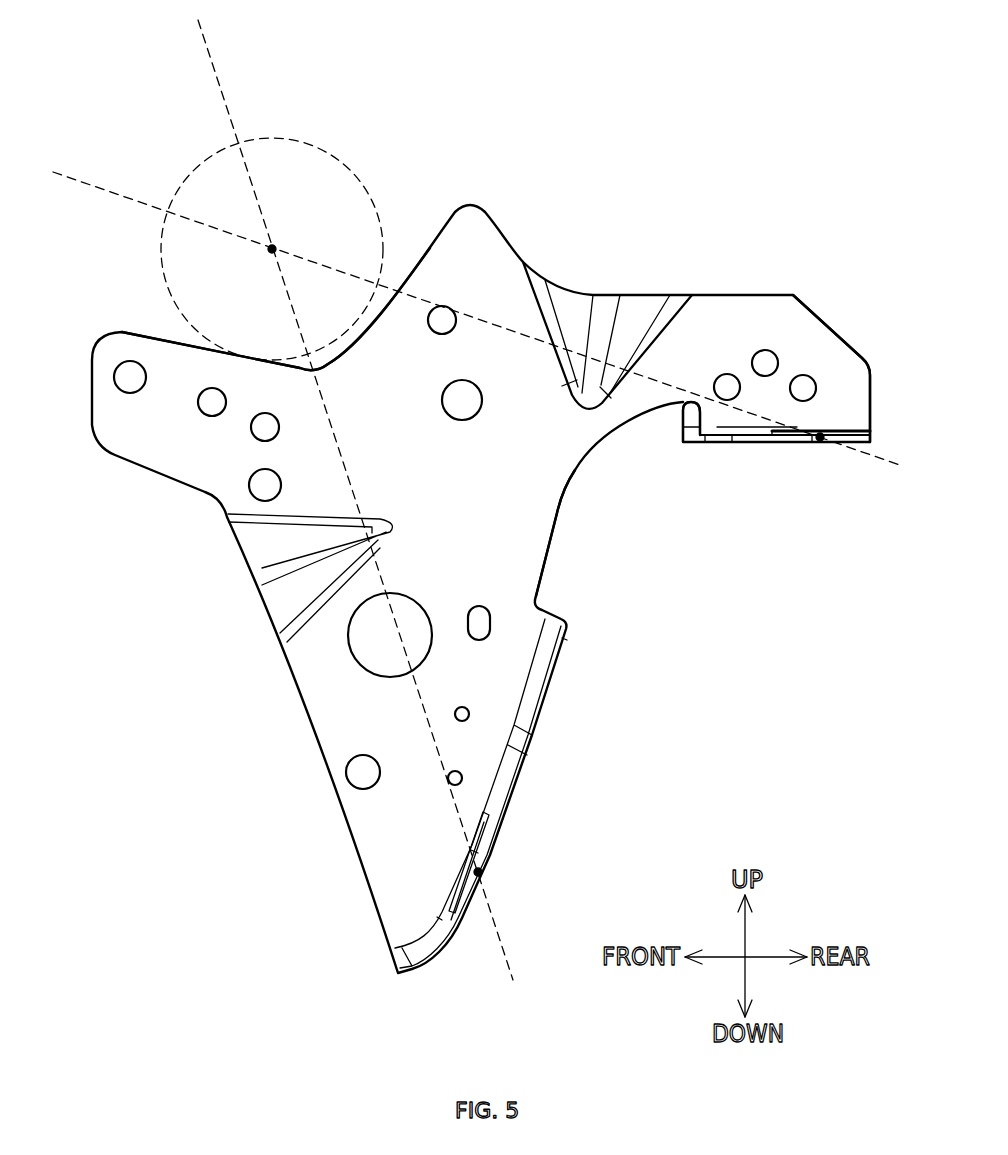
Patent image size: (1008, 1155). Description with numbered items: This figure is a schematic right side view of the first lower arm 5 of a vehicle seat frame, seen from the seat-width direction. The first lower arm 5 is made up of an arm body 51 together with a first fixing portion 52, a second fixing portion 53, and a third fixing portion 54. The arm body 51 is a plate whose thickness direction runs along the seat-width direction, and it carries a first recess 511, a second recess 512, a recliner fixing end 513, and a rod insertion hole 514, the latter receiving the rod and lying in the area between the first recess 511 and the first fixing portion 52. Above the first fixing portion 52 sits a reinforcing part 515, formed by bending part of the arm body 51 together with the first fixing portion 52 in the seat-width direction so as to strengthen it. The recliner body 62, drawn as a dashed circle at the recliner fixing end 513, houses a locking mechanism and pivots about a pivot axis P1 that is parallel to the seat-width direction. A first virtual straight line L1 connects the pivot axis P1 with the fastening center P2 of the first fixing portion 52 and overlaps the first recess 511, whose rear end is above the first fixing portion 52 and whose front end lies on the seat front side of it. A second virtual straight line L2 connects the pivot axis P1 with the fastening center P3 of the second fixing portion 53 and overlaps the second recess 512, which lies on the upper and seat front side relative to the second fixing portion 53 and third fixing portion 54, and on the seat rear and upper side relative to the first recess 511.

The first lower arm 5 is at (764, 252).
The arm body 51 is at (510, 548).
The first recess 511 is at (258, 582).
The second recess 512 is at (603, 296).
The recliner fixing end 513 is at (327, 371).
The rod insertion hole 514 is at (391, 672).
The reinforcing part 515 is at (538, 665).
The first fixing portion 52 is at (510, 813).
The second fixing portion 53 is at (770, 437).
The third fixing portion 54 is at (695, 433).
The recliner body 62 is at (320, 167).
The first virtual straight line L1 is at (349, 491).
The second virtual straight line L2 is at (459, 311).
The pivot axis P1 is at (291, 236).
The fastening center P2 is at (482, 872).
The fastening center P3 is at (820, 445).